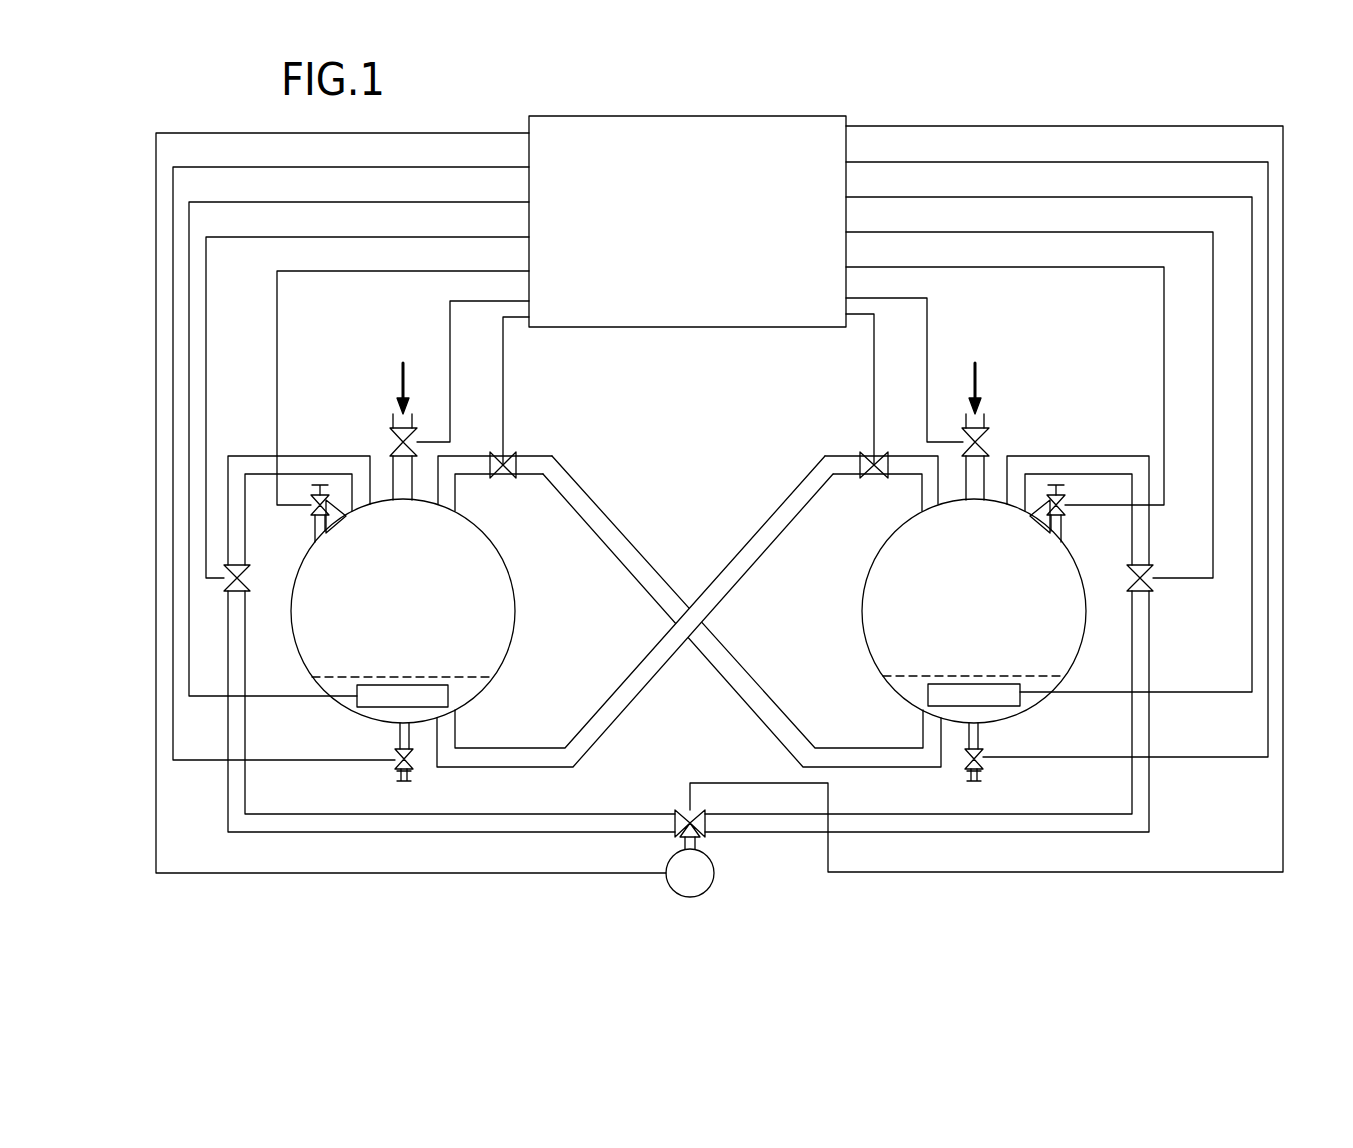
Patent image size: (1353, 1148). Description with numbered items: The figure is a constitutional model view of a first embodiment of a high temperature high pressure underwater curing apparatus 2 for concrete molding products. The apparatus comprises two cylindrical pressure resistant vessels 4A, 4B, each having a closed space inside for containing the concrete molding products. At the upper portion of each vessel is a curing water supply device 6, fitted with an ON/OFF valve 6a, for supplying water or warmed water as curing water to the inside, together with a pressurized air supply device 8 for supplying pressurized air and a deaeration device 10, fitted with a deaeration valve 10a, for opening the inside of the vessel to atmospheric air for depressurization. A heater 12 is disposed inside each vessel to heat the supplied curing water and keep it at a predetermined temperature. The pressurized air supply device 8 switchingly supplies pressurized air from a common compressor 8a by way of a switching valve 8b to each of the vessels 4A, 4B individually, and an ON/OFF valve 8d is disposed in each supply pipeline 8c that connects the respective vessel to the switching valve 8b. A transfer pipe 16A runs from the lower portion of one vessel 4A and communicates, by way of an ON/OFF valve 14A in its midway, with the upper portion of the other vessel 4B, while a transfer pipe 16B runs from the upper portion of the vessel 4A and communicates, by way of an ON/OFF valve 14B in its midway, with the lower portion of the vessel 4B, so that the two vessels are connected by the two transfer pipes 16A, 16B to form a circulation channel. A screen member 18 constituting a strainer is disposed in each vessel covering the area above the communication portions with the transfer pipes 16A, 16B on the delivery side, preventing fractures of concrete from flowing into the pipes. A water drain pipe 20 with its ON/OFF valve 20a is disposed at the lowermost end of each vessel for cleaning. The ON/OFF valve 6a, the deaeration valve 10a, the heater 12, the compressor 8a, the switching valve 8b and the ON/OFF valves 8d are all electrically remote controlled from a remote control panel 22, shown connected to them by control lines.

The high temperature high pressure underwater curing apparatus 2 is at (350, 893).
The pressure resistant vessel 4A is at (517, 611).
The pressure resistant vessel 4B is at (862, 611).
The curing water supply device 6 is at (391, 438).
The ON/OFF valve 6a is at (426, 440).
The pressurized air supply device 8 is at (303, 455).
The compressor 8a is at (703, 877).
The switching valve 8b is at (678, 812).
The supply pipeline 8c is at (228, 800).
The ON/OFF valve 8d is at (250, 588).
The deaeration device 10 is at (312, 521).
The deaeration valve 10a is at (338, 518).
The heater 12 is at (450, 695).
The ON/OFF valve 14A is at (866, 473).
The ON/OFF valve 14B is at (509, 478).
The transfer pipe 16A is at (590, 732).
The transfer pipe 16B is at (723, 673).
The screen member 18 is at (462, 676).
The water drain pipe 20 is at (396, 777).
The ON/OFF valve 20a is at (393, 757).
The remote control panel 22 is at (777, 332).